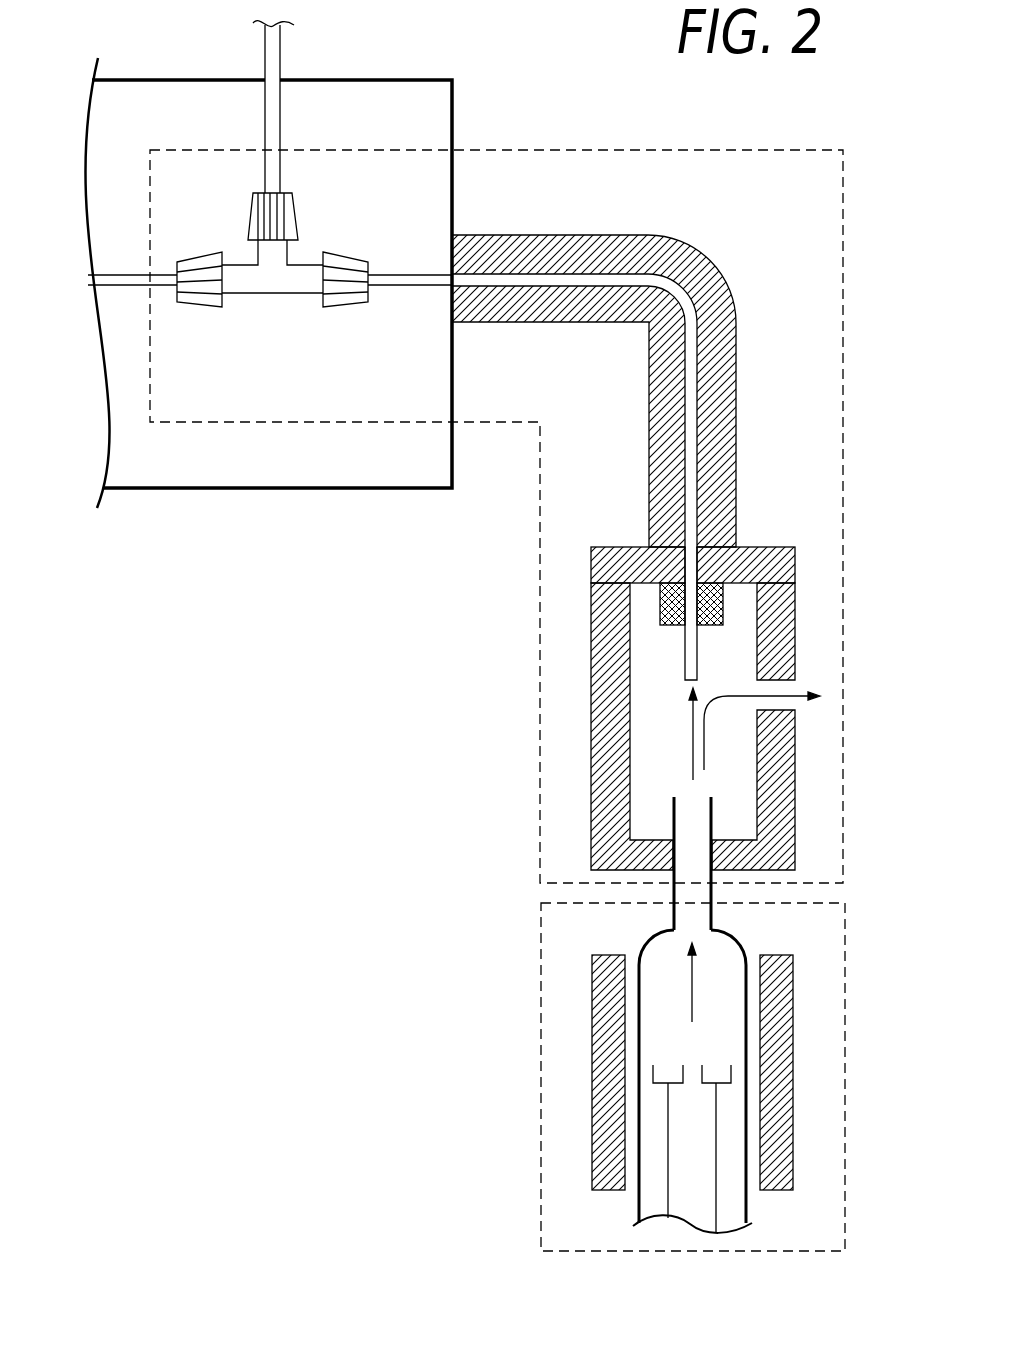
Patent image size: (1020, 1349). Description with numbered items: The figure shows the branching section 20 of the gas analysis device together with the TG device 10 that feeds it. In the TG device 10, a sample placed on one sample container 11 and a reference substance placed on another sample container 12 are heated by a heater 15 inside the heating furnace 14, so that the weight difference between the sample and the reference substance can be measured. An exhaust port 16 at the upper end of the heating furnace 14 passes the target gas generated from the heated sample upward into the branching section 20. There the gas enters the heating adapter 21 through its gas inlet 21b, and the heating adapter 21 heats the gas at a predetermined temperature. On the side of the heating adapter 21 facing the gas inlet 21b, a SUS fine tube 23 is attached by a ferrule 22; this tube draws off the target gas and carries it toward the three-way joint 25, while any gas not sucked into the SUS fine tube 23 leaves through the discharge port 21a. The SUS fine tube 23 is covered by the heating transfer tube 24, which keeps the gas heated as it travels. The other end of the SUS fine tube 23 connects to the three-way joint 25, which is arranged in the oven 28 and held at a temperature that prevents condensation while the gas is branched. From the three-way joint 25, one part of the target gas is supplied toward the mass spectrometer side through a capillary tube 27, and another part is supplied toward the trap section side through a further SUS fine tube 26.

The TG device 10 is at (540, 1068).
The sample container 11 is at (664, 1072).
The sample container 12 is at (710, 1072).
The heating furnace 14 is at (737, 940).
The heater 15 is at (607, 1073).
The exhaust port 16 is at (686, 929).
The branching section 20 is at (540, 668).
The heating adapter 21 is at (787, 806).
The discharge port 21a is at (790, 688).
The gas inlet 21b is at (693, 824).
The ferrule 22 is at (673, 620).
The SUS fine tube 23 is at (700, 669).
The heating transfer tube 24 is at (736, 352).
The three-way joint 25 is at (304, 262).
The SUS fine tube 26 is at (273, 117).
The capillary tube 27 is at (115, 277).
The oven 28 is at (452, 108).